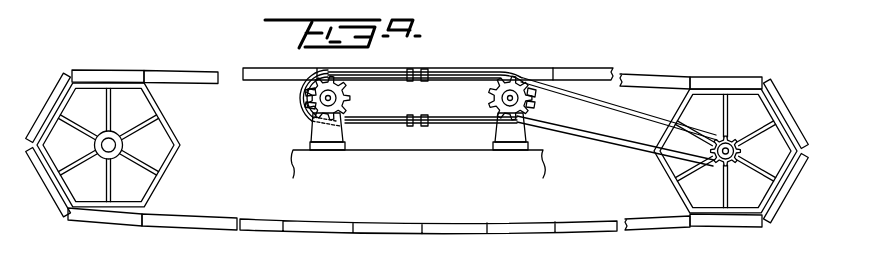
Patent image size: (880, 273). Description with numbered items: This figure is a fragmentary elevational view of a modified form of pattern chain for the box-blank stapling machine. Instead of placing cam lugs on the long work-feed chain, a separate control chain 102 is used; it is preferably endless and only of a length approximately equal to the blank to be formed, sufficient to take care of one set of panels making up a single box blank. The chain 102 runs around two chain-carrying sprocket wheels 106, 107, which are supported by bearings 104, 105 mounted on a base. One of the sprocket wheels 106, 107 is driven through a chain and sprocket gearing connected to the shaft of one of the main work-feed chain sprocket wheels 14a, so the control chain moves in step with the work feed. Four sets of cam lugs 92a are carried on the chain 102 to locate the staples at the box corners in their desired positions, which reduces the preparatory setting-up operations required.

The cam lugs 92a is at (310, 96).
The chain 102 is at (385, 123).
The bearing 104 is at (318, 133).
The bearing 105 is at (520, 138).
The sprocket wheel 106 is at (348, 96).
The sprocket wheel 107 is at (488, 97).
The main work-feed chain sprocket wheel 14a is at (772, 199).